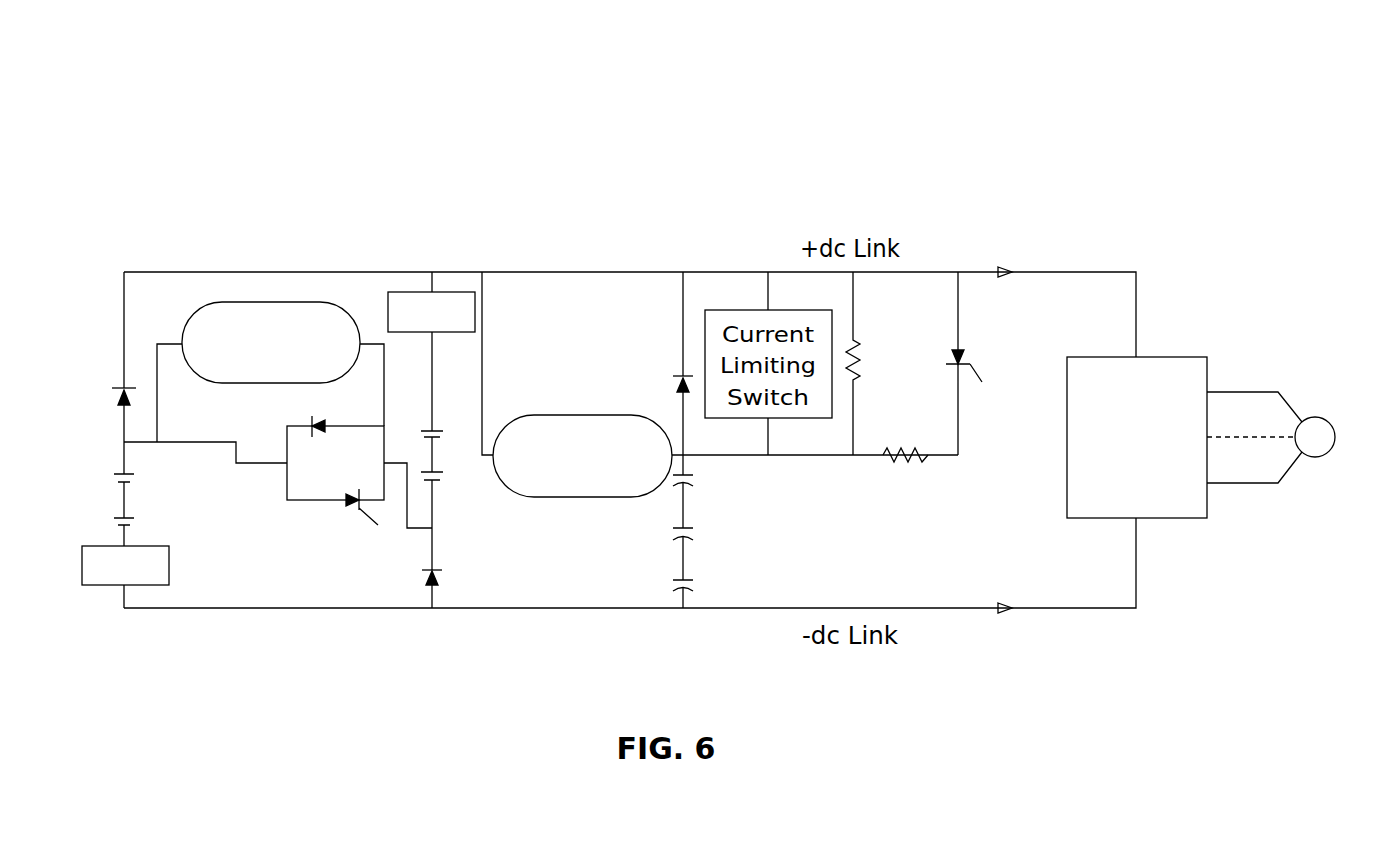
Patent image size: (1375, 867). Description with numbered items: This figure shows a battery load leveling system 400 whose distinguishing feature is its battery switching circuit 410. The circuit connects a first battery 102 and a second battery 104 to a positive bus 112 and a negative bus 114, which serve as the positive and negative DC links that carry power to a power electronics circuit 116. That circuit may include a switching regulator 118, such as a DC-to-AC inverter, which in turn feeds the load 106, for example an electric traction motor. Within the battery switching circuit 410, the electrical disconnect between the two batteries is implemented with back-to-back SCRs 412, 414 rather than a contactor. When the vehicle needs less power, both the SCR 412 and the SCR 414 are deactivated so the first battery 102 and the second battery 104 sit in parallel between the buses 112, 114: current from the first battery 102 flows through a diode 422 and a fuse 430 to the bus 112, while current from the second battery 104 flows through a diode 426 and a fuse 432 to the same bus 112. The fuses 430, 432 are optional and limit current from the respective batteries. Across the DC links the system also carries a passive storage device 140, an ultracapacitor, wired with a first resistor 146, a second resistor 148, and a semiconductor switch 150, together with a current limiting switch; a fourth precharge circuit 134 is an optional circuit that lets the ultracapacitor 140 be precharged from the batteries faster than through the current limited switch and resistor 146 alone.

The system 400 is at (1048, 244).
The battery switching circuit 410 is at (330, 256).
The fuse 432 is at (410, 291).
The diode 422 is at (121, 388).
The SCR 412 is at (309, 424).
The second battery 104 is at (416, 446).
The SCR 414 is at (358, 505).
The diode 426 is at (437, 570).
The first battery 102 is at (106, 502).
The fuse 430 is at (110, 588).
The fourth precharge circuit 134 is at (570, 416).
The passive storage device 140 is at (658, 537).
The positive bus 112 is at (920, 270).
The negative bus 114 is at (752, 610).
The semiconductor switch 150 is at (962, 365).
The first resistor 146 is at (865, 358).
The second resistor 148 is at (907, 465).
The power electronics circuit 116 is at (1157, 357).
The switching regulator 118 is at (1137, 437).
The load 106 is at (1318, 420).